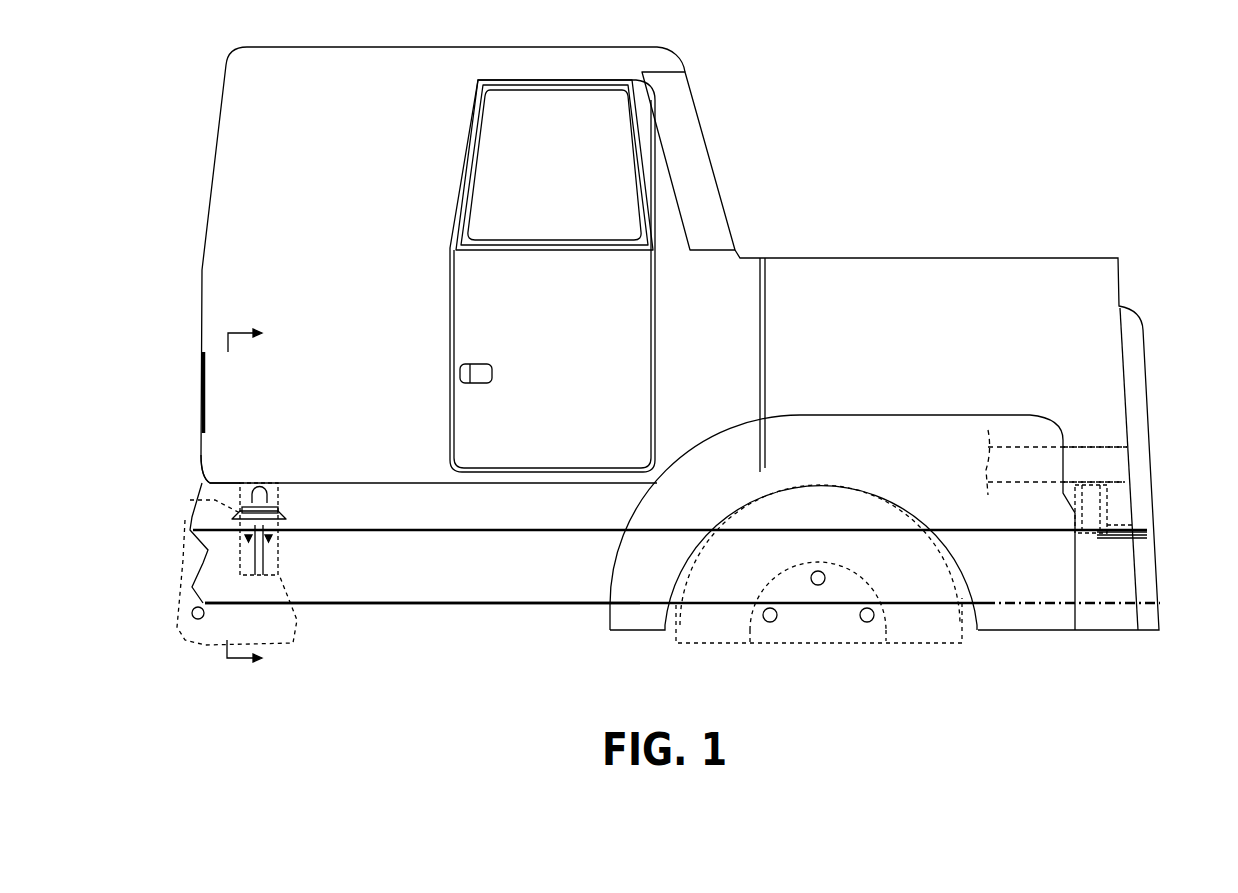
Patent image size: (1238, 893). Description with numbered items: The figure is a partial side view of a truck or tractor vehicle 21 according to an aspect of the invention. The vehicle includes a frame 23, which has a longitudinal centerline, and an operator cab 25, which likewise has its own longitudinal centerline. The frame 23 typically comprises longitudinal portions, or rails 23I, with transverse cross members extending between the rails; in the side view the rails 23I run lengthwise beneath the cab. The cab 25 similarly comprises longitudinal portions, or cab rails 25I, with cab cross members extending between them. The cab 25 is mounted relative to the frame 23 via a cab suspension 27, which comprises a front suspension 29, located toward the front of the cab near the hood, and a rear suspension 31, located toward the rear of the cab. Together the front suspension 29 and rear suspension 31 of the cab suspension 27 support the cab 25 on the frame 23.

The truck or tractor vehicle 21 is at (179, 142).
The frame 23 is at (390, 586).
The longitudinal portions (rails) 23I is at (328, 572).
The operator cab 25 is at (656, 61).
The longitudinal portions (cab rails) 25I is at (1096, 452).
The cab suspension 27 is at (224, 518).
The front suspension 29 is at (1100, 507).
The rear suspension 31 is at (236, 482).